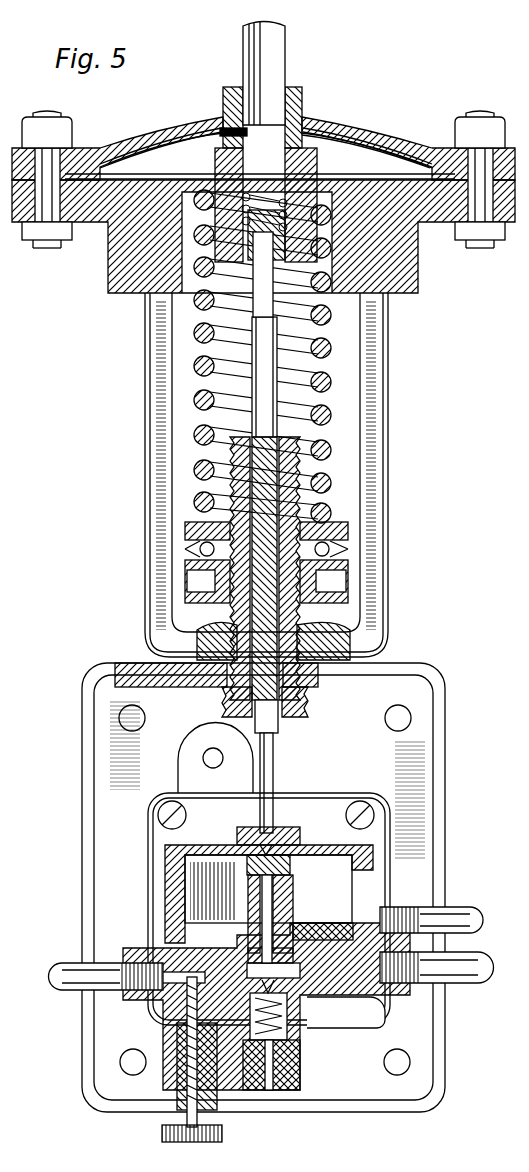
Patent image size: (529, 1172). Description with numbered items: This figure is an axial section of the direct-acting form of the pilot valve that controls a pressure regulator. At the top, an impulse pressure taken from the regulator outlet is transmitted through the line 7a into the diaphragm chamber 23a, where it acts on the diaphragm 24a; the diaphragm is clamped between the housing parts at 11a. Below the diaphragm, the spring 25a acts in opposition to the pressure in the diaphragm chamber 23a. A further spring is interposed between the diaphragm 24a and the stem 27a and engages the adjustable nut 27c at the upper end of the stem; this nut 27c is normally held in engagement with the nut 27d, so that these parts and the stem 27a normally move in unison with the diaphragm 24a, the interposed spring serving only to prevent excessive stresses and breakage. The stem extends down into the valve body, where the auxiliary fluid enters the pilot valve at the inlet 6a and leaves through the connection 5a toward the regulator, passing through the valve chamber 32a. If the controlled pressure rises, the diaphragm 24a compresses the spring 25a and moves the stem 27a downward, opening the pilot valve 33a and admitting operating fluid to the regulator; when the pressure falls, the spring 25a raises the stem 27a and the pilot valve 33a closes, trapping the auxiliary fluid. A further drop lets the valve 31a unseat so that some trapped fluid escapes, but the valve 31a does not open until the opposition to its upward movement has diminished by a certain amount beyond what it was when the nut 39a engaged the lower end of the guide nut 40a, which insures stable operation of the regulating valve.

The line 7a is at (284, 40).
The diaphragm clamping plate 11a is at (315, 140).
The diaphragm chamber 23a is at (353, 152).
The diaphragm 24a is at (387, 172).
The adjustable nut 27c is at (243, 243).
The nut 27d is at (248, 255).
The stem 27a is at (250, 375).
The spring 25a is at (215, 400).
The valve 31a is at (266, 852).
The guide nut 40a is at (278, 930).
The valve chamber 32a is at (252, 885).
The nut 39a is at (297, 925).
The inlet 6a is at (68, 990).
The outlet pipe 5a is at (408, 990).
The pilot valve 33a is at (280, 1003).